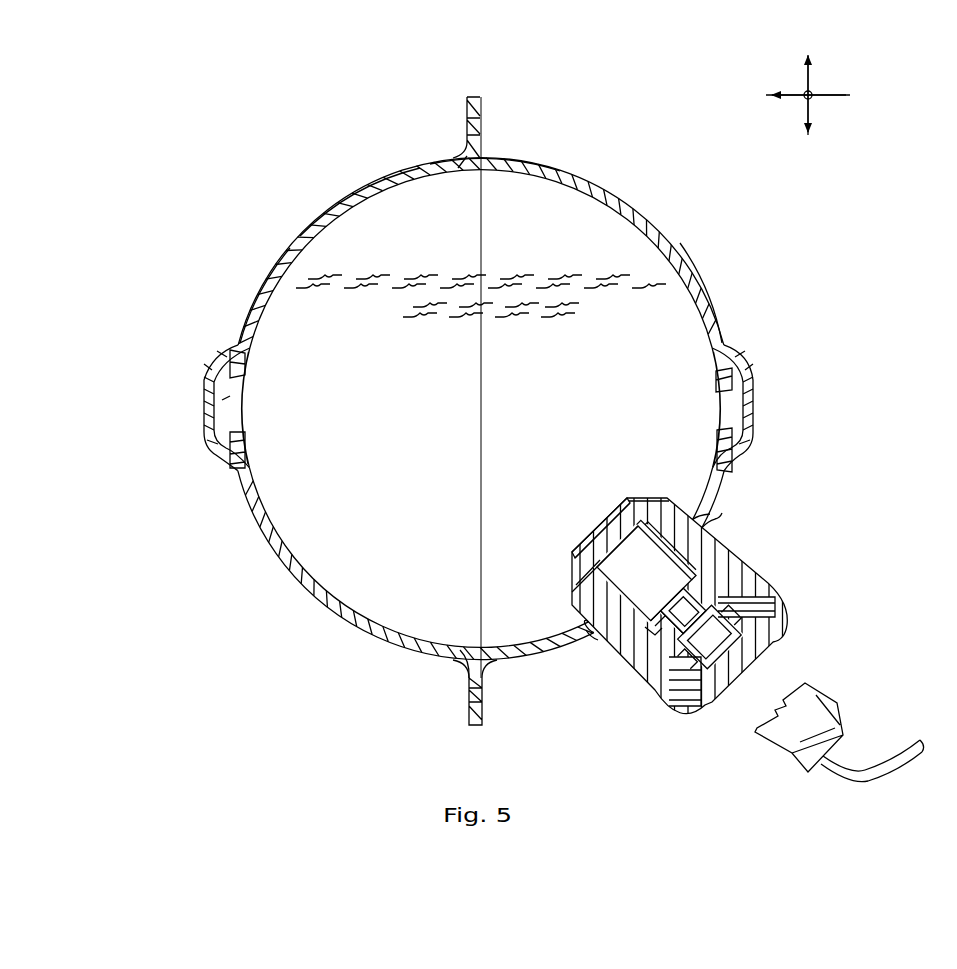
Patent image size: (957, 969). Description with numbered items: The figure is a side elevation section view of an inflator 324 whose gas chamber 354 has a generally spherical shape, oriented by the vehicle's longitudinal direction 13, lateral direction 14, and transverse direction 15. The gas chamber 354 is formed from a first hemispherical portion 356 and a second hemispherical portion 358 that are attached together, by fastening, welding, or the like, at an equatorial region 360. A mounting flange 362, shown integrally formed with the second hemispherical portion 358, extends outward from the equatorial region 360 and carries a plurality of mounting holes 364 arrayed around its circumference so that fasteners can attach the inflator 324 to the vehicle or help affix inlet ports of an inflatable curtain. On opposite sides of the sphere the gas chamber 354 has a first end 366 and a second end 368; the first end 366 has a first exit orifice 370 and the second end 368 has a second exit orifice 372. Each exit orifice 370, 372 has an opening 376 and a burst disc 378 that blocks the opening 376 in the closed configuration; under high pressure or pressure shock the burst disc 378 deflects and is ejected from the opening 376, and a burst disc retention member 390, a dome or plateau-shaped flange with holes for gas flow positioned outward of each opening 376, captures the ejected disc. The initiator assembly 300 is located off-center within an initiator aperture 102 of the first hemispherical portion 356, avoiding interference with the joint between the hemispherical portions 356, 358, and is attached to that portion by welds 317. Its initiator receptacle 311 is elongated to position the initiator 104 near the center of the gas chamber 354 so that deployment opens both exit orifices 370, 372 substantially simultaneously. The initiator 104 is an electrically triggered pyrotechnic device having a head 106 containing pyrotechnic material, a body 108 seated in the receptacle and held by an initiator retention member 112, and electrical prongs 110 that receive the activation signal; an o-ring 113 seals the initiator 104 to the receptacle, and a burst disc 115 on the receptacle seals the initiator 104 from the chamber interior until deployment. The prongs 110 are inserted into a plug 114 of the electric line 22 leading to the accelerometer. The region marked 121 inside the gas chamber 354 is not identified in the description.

The initiator assembly 300 is at (800, 585).
The inflator 324 is at (627, 148).
The gas chamber 354 is at (520, 158).
The first hemispherical portion 356 is at (648, 222).
The second hemispherical portion 358 is at (362, 188).
The equatorial region 360 is at (500, 735).
The mounting flange 362 is at (484, 679).
The mounting holes 364 is at (478, 124).
The first end 366 is at (728, 338).
The second end 368 is at (250, 318).
The first exit orifice 370 is at (744, 372).
The second exit orifice 372 is at (229, 394).
The opening 376 is at (754, 432).
The burst disc 378 is at (718, 400).
The burst disc retention member 390 is at (756, 385).
The fuel 121 is at (428, 500).
The burst disc 115 is at (606, 514).
The welds 317 is at (718, 516).
The initiator 104 is at (694, 549).
The o-ring 113 is at (746, 566).
The initiator aperture 102 is at (600, 615).
The head 106 is at (640, 597).
The initiator receptacle 311 is at (627, 667).
The body 108 is at (660, 657).
The initiator retention member 112 is at (680, 687).
The electrical prongs 110 is at (737, 690).
The plug 114 is at (773, 752).
The electric line 22 is at (848, 770).
The transverse direction 15 is at (812, 86).
The lateral direction 14 is at (800, 108).
The longitudinal direction 13 is at (818, 107).